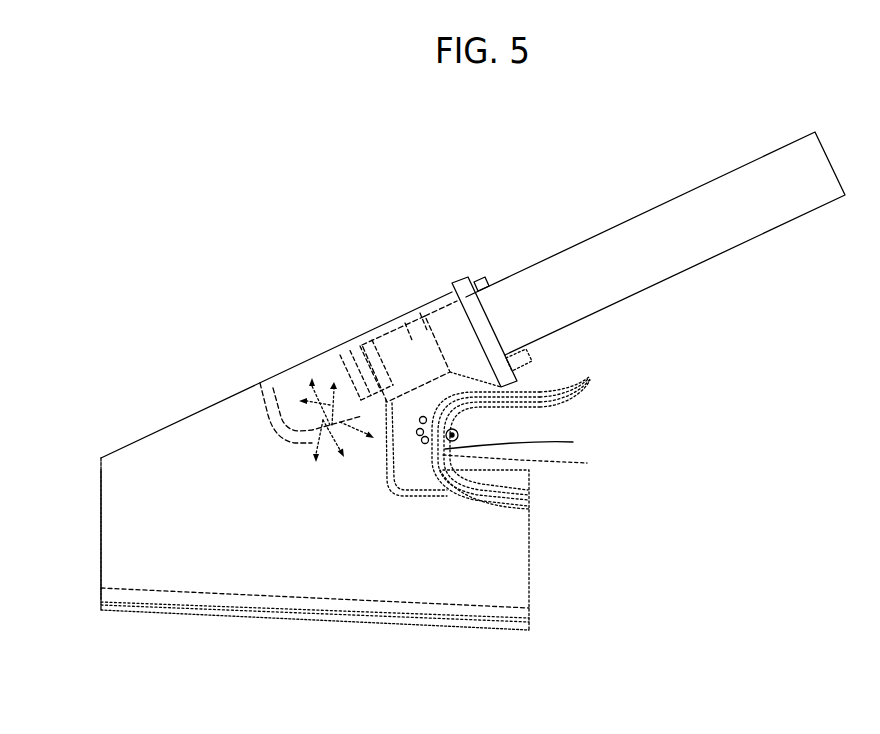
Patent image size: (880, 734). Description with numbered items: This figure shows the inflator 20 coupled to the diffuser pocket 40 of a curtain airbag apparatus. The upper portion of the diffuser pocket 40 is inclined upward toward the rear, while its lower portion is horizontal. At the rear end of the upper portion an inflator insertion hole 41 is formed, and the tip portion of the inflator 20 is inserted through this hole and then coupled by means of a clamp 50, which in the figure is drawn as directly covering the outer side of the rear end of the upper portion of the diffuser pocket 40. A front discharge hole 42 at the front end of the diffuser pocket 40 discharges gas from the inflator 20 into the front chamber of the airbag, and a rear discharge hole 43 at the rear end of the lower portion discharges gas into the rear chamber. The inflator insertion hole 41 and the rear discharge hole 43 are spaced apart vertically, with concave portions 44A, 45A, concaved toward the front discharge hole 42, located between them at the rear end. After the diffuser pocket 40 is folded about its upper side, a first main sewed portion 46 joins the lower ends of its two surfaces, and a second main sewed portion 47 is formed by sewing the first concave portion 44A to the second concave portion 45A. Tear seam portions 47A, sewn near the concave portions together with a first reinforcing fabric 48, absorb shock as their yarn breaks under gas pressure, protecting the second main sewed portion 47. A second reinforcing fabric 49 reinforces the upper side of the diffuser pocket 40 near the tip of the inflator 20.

The inflator 20 is at (600, 214).
The diffuser pocket 40 is at (147, 416).
The inflator insertion hole 41 is at (481, 280).
The front discharge hole 42 is at (100, 537).
The rear discharge hole 43 is at (530, 550).
The first concave portion 44A is at (573, 442).
The second concave portion 45A is at (438, 430).
The first main sewed portion 46 is at (273, 620).
The second main sewed portion 47 is at (517, 513).
The tear seam portion 47A is at (538, 422).
The first reinforcing fabric 48 is at (587, 463).
The second reinforcing fabric 49 is at (258, 384).
The clamp 50 is at (465, 280).